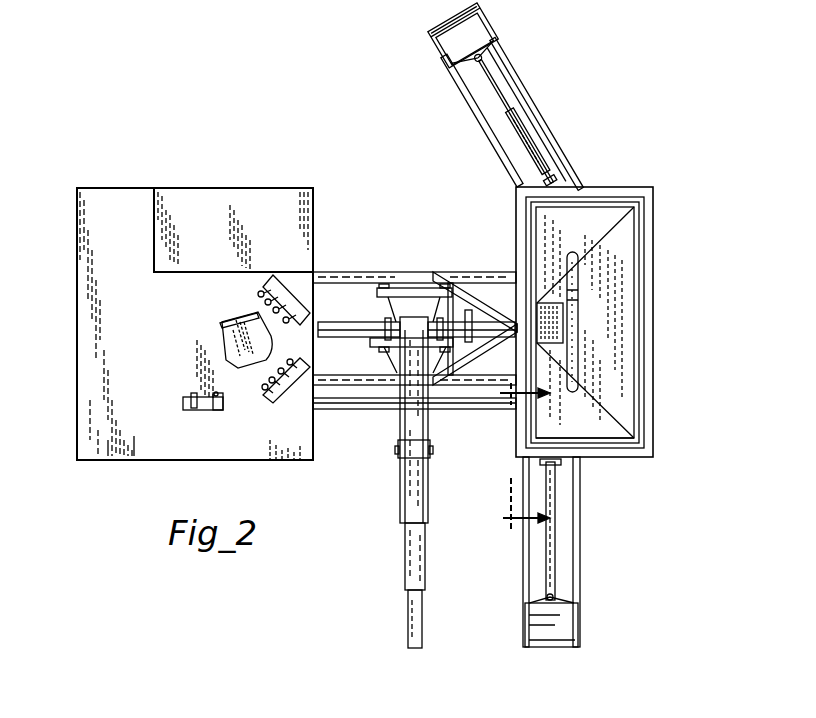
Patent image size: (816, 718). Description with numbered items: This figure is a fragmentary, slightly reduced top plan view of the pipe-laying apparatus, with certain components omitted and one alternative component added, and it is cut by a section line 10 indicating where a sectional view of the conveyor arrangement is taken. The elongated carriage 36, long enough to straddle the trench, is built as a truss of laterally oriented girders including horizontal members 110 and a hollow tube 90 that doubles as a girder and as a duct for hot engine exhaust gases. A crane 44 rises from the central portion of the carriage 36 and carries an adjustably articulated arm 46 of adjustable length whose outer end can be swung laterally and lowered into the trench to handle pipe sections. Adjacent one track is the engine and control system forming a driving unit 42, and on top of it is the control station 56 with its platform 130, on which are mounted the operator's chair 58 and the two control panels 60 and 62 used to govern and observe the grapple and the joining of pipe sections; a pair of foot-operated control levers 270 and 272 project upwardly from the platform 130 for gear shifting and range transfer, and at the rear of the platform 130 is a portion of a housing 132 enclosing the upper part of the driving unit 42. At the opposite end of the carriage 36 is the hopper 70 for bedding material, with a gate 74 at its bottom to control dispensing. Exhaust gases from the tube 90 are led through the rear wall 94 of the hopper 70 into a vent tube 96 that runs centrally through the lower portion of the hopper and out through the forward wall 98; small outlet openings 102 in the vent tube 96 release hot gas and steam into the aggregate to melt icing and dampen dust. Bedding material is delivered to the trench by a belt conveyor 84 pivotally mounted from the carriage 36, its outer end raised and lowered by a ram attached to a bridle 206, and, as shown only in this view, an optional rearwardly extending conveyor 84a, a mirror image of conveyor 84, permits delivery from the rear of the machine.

The section line 10 is at (509, 458).
The carriage 36 is at (463, 262).
The engine and control system 42 is at (217, 462).
The crane 44 is at (392, 490).
The articulated arm 46 is at (440, 445).
The control station 56 is at (217, 278).
The chair 58 is at (225, 335).
The control panel 60 is at (290, 276).
The control panel 62 is at (302, 386).
The hopper 70 is at (664, 270).
The gate 74 is at (549, 303).
The second conveyor 84 is at (580, 530).
The rearwardly extending conveyor 84a is at (528, 86).
The hollow tube 90 is at (395, 272).
The rear wall 94 is at (598, 198).
The vent tube 96 is at (578, 358).
The forward wall 98 is at (616, 445).
The outlet openings 102 is at (576, 300).
The horizontal members 110 is at (348, 385).
The platform 130 is at (108, 198).
The housing 132 is at (276, 200).
The bridle 206 is at (580, 600).
The control lever 270 is at (190, 397).
The control lever 272 is at (223, 408).